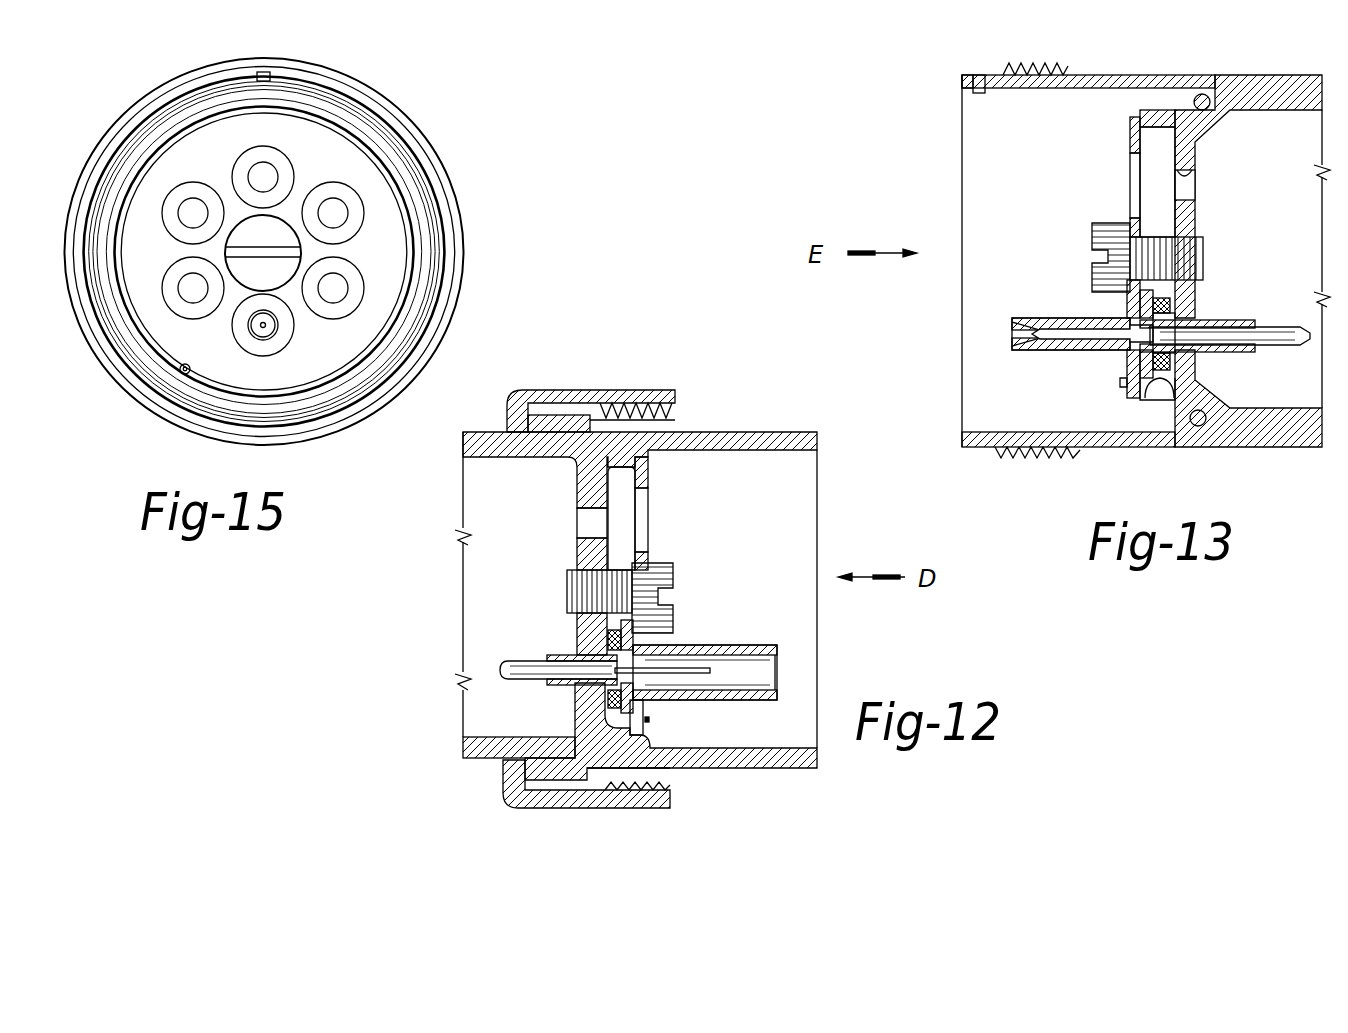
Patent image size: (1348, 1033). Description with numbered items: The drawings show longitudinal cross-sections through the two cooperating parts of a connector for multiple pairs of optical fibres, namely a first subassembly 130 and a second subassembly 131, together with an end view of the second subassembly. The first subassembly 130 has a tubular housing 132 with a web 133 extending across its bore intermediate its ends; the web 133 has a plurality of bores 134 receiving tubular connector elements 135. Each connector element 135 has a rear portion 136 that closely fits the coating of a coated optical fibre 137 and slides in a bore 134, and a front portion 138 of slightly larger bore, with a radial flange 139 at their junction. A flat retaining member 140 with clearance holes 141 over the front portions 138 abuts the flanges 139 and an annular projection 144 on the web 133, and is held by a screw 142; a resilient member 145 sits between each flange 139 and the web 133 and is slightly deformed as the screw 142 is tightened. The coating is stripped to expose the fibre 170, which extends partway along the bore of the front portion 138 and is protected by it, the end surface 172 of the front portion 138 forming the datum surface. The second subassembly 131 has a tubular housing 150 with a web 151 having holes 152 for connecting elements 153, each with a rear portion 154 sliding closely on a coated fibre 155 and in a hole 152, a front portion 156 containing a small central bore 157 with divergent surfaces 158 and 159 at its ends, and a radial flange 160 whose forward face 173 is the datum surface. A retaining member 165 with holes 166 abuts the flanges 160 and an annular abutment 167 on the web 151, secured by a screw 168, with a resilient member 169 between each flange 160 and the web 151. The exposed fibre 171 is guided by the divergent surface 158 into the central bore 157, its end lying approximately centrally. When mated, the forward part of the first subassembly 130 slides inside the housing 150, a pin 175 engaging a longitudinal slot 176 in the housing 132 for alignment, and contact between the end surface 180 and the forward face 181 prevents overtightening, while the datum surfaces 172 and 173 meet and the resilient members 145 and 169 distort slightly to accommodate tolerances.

In FIG. 12, the first subassembly 130 is at (638, 585).
In FIG. 13, the second subassembly 131 is at (1111, 273).
In FIG. 12, the housing 132 is at (767, 440).
In FIG. 12, the web 133 is at (585, 492).
In FIG. 12, the bores 134 is at (585, 517).
In FIG. 12, the connector elements 135 is at (640, 705).
In FIG. 12, the rear portion 136 is at (565, 686).
In FIG. 12, the coated optical fibre 137 is at (507, 679).
In FIG. 12, the front portion 138 is at (775, 645).
In FIG. 12, the radial flange 139 is at (585, 630).
In FIG. 12, the retaining member 140 is at (648, 557).
In FIG. 12, the holes 141 is at (648, 498).
In FIG. 12, the screw 142 is at (673, 580).
In FIG. 12, the annular projection 144 is at (683, 428).
In FIG. 12, the resilient member 145 is at (583, 636).
In FIG. 15, the housing 150 is at (140, 113).
In FIG. 13, the housing 150 is at (1155, 78).
In FIG. 13, the web 151 is at (1190, 150).
In FIG. 15, the holes 152 is at (232, 173).
In FIG. 13, the holes 152 is at (1190, 178).
In FIG. 13, the connecting elements 153 is at (1130, 348).
In FIG. 13, the rear portion 154 is at (1245, 320).
In FIG. 13, the coated fibre 155 is at (1292, 348).
In FIG. 15, the front portion 156 is at (277, 335).
In FIG. 13, the front portion 156 is at (1012, 318).
In FIG. 15, the central bore 157 is at (262, 333).
In FIG. 13, the central bore 157 is at (1045, 350).
In FIG. 13, the divergent surface 158 is at (1125, 330).
In FIG. 13, the divergent surface 159 is at (1012, 337).
In FIG. 13, the radial flange 160 is at (1145, 400).
In FIG. 15, the retaining member 165 is at (388, 217).
In FIG. 13, the retaining member 165 is at (1130, 135).
In FIG. 15, the holes 166 is at (313, 192).
In FIG. 13, the holes 166 is at (1130, 160).
In FIG. 13, the annular abutment 167 is at (1147, 110).
In FIG. 15, the screw 168 is at (263, 253).
In FIG. 13, the screw 168 is at (1108, 222).
In FIG. 13, the resilient member 169 is at (1165, 380).
In FIG. 12, the fibre 170 is at (710, 674).
In FIG. 13, the fibre 171 is at (1123, 342).
In FIG. 12, the end surface 172 is at (785, 653).
In FIG. 13, the forward face 173 is at (1135, 370).
In FIG. 15, the pin 175 is at (297, 82).
In FIG. 13, the pin 175 is at (975, 93).
In FIG. 12, the longitudinal slot 176 is at (805, 432).
In FIG. 15, the end surface 180 is at (397, 128).
In FIG. 13, the end surface 180 is at (962, 80).
In FIG. 12, the forward face 181 is at (593, 422).